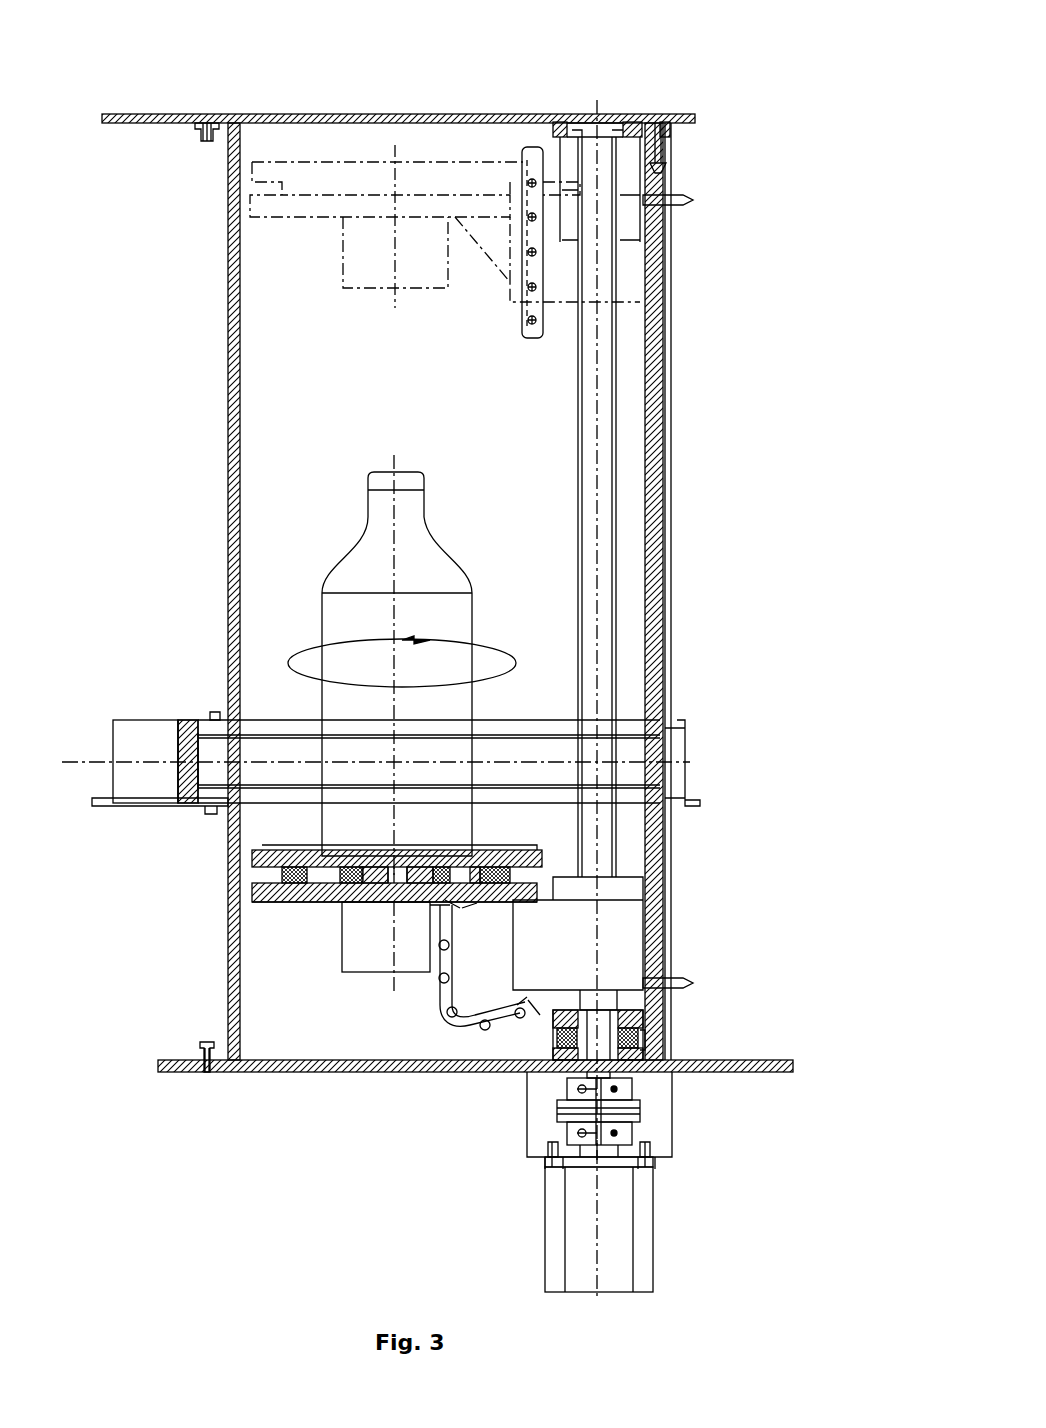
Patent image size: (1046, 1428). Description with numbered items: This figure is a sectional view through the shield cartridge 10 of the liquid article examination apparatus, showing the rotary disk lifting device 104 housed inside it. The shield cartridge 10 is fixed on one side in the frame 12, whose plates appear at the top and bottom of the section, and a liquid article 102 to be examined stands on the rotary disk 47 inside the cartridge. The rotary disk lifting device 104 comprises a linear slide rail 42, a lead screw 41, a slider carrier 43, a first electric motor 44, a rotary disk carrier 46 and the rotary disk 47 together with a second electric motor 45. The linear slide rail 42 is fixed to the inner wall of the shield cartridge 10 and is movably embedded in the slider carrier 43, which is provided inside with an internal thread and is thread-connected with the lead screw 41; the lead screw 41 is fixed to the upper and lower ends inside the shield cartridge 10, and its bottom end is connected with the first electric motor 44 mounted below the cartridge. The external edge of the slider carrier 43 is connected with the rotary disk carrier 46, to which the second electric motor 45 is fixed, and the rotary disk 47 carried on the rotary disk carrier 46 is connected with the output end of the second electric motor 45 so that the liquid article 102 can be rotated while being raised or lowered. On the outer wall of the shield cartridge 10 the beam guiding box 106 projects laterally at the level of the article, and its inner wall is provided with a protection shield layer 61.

The shield cartridge 10 is at (228, 392).
The frame 12 is at (675, 116).
The lead screw 41 is at (603, 373).
The linear slide rail 42 is at (668, 452).
The slider carrier 43 is at (593, 945).
The first electric motor 44 is at (622, 1133).
The second electric motor 45 is at (378, 937).
The rotary disk carrier 46 is at (267, 905).
The rotary disk 47 is at (273, 868).
The protection shield layer 61 is at (203, 720).
The liquid article 102 is at (408, 530).
The rotary disk lifting device 104 is at (317, 905).
The beam guiding box 106 is at (203, 805).